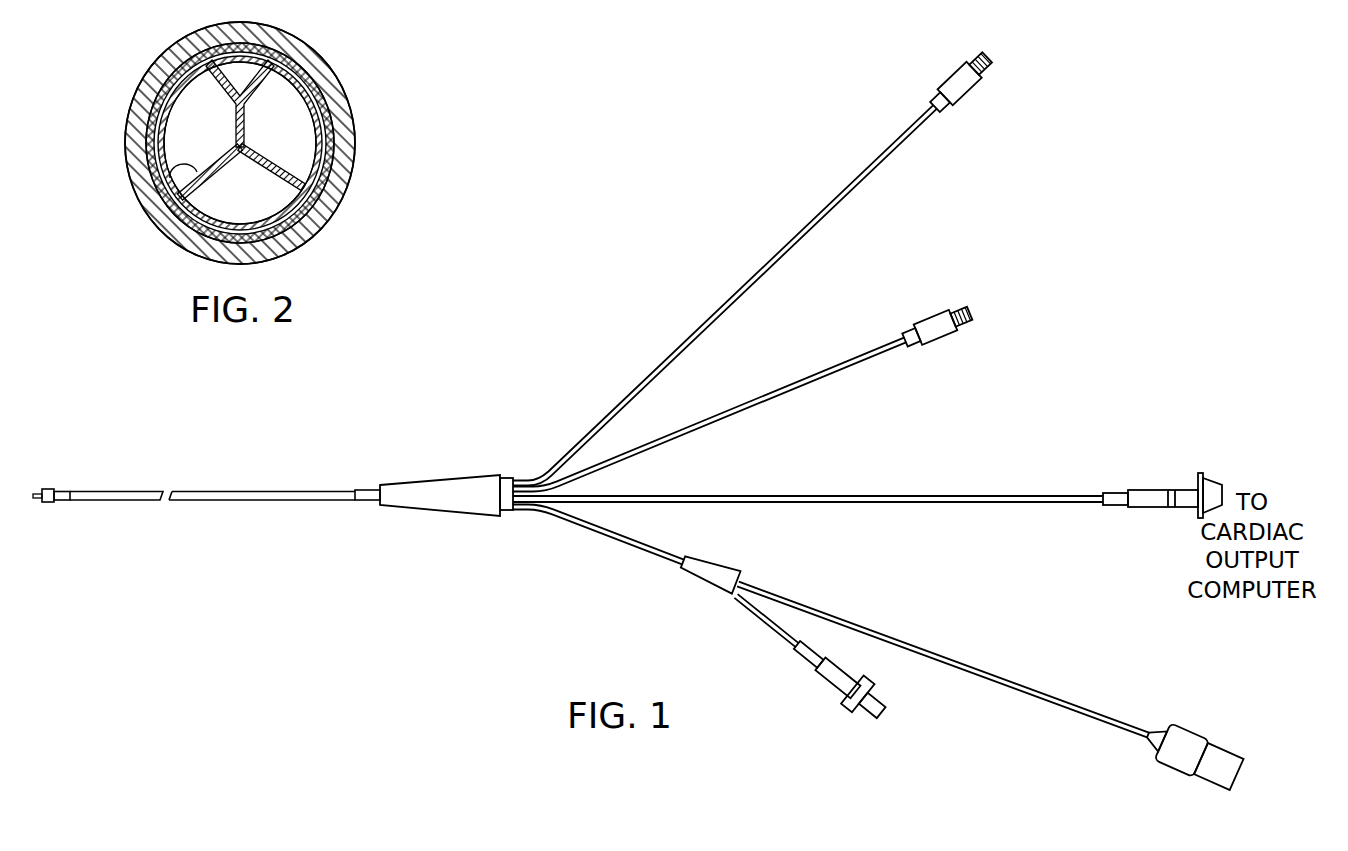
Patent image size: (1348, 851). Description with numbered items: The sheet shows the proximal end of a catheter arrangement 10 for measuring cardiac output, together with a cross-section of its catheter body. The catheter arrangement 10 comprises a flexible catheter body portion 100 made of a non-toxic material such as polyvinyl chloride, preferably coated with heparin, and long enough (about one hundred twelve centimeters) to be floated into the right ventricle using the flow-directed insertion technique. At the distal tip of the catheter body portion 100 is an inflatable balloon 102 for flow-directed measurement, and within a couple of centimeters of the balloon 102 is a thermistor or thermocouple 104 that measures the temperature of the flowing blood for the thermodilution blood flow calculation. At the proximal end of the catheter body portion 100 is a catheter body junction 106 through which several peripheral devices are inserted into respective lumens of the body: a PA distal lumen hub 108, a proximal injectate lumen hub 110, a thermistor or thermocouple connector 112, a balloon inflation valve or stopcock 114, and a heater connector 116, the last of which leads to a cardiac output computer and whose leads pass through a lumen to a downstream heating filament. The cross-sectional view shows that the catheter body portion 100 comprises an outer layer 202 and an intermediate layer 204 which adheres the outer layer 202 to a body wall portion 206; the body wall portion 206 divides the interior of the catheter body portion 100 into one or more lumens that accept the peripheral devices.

In FIG. 1, the catheter arrangement 10 is at (366, 452).
In FIG. 2, the catheter body portion 100 is at (343, 90).
In FIG. 1, the catheter body portion 100 is at (231, 517).
In FIG. 1, the inflatable balloon 102 is at (45, 502).
In FIG. 1, the thermistor or thermocouple 104 is at (63, 492).
In FIG. 1, the catheter body junction 106 is at (426, 504).
In FIG. 1, the PA distal lumen hub 108 is at (940, 100).
In FIG. 1, the proximal injectate lumen hub 110 is at (912, 330).
In FIG. 1, the thermistor or thermocouple connector 112 is at (1190, 738).
In FIG. 1, the balloon inflation valve or stopcock 114 is at (840, 680).
In FIG. 1, the heater connector 116 is at (1212, 480).
In FIG. 2, the outer layer 202 is at (342, 117).
In FIG. 2, the intermediate layer 204 is at (140, 97).
In FIG. 2, the body wall portion 206 is at (145, 167).